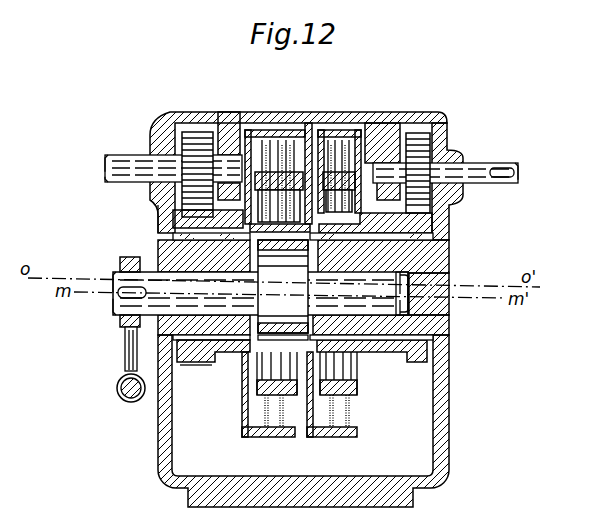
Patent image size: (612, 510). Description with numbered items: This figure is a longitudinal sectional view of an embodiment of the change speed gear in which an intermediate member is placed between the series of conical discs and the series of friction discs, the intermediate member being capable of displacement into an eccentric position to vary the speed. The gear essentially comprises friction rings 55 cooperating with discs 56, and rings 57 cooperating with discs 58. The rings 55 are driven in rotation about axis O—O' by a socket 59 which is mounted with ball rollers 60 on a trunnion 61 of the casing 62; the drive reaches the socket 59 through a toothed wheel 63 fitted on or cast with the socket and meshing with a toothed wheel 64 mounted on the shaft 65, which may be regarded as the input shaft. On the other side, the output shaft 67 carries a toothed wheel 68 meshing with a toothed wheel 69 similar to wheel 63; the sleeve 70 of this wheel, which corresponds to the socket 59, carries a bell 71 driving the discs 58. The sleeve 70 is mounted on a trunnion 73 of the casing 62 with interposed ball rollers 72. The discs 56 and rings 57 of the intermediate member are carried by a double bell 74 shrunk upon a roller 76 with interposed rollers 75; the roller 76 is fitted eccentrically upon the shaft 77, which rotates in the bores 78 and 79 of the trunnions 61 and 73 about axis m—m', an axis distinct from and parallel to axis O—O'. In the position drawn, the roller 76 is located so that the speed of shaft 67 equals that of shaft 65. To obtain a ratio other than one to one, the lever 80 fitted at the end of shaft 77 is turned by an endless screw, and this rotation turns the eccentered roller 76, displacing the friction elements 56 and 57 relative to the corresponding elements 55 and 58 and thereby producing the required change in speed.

The friction rings 55 is at (358, 160).
The discs 56 is at (340, 150).
The rings 57 is at (303, 140).
The discs 58 is at (285, 145).
The socket 59 is at (433, 236).
The ball rollers 60 is at (430, 245).
The trunnion 61 is at (420, 266).
The casing 62 is at (248, 128).
The toothed wheel 63 is at (432, 220).
The toothed wheel 64 is at (430, 140).
The shaft 65 is at (495, 170).
The output shaft 67 is at (107, 177).
The toothed wheel 68 is at (197, 150).
The toothed wheel 69 is at (163, 212).
The sleeve 70 is at (178, 224).
The bell 71 is at (268, 138).
The ball rollers 72 is at (172, 237).
The trunnion 73 is at (158, 322).
The double bell 74 is at (323, 140).
The rollers 75 is at (290, 242).
The roller 76 is at (297, 316).
The shaft 77 is at (406, 292).
The bore 78 is at (400, 302).
The bore 79 is at (118, 292).
The lever 80 is at (124, 368).